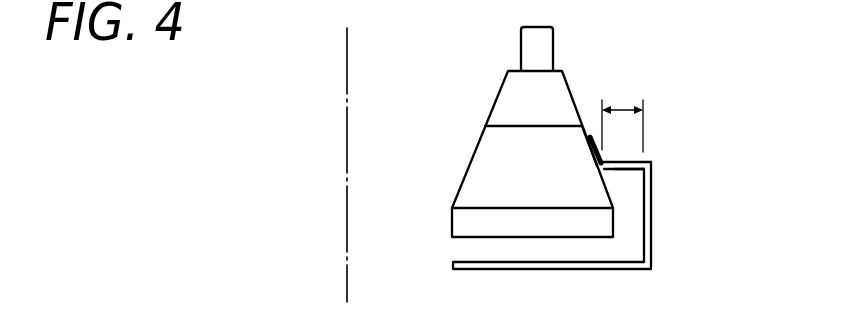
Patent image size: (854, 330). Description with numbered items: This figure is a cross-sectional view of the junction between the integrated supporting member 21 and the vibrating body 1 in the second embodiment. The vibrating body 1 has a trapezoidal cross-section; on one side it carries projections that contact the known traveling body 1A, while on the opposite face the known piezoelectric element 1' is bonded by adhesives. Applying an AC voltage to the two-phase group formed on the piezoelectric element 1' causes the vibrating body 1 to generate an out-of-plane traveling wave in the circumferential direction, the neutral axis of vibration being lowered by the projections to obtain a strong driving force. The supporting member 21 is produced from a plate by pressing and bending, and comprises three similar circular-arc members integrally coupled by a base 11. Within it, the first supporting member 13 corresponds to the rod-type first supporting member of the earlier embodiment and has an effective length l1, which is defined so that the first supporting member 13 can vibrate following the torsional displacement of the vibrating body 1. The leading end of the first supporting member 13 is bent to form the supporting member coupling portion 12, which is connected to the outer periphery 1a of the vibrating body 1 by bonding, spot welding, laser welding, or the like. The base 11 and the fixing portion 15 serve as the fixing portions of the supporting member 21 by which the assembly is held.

The vibrating body 1 is at (523, 139).
The traveling body 1A is at (553, 43).
The outer periphery 1a is at (588, 154).
The piezoelectric element 1' is at (503, 217).
The base 11 is at (542, 270).
The supporting member coupling portion 12 is at (594, 158).
The first supporting member 13 is at (615, 169).
The fixing portion 15 is at (653, 229).
The supporting member 21 is at (764, 167).
The effective length l1 is at (621, 108).